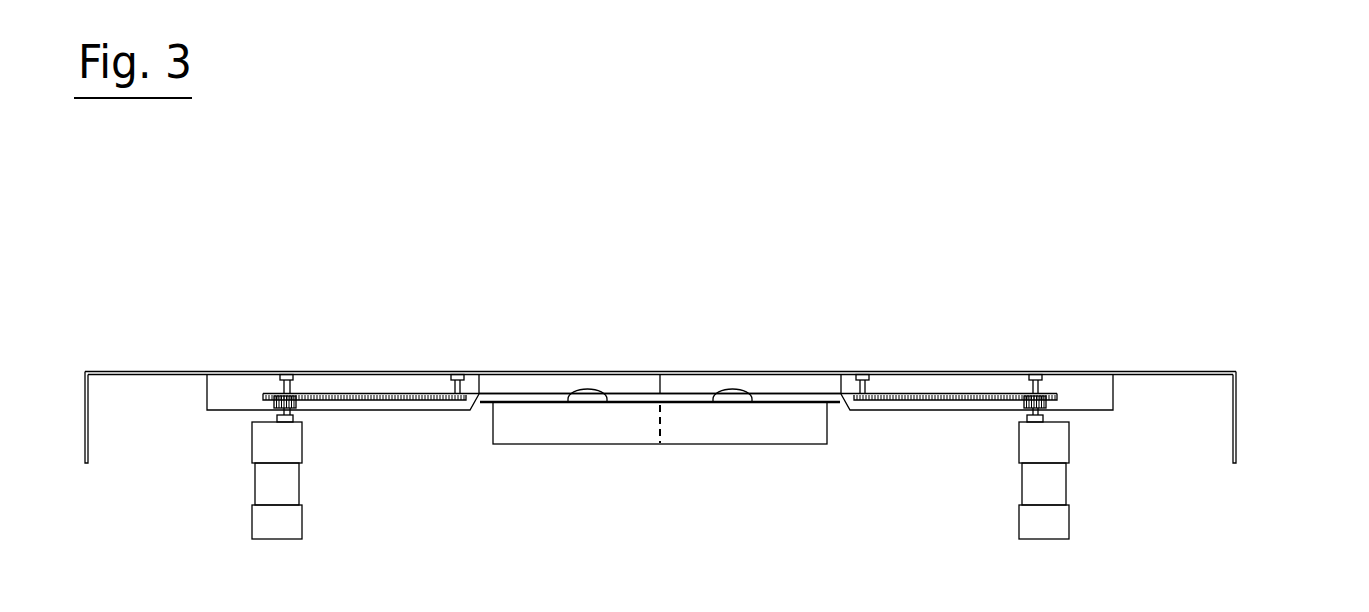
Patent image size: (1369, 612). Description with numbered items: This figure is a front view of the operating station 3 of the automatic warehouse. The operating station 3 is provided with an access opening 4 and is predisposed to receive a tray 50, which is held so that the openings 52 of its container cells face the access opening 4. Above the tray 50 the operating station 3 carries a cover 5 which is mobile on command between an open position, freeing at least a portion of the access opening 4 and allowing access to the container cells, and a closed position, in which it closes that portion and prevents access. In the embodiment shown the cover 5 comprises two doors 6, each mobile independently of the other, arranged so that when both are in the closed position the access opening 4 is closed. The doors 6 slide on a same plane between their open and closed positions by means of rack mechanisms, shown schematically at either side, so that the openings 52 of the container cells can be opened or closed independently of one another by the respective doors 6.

The operating station 3 is at (1285, 326).
The access opening 4 is at (828, 373).
The cover 5 is at (660, 295).
The doors 6 is at (630, 387).
The tray 50 is at (503, 432).
The opening 52 is at (570, 404).